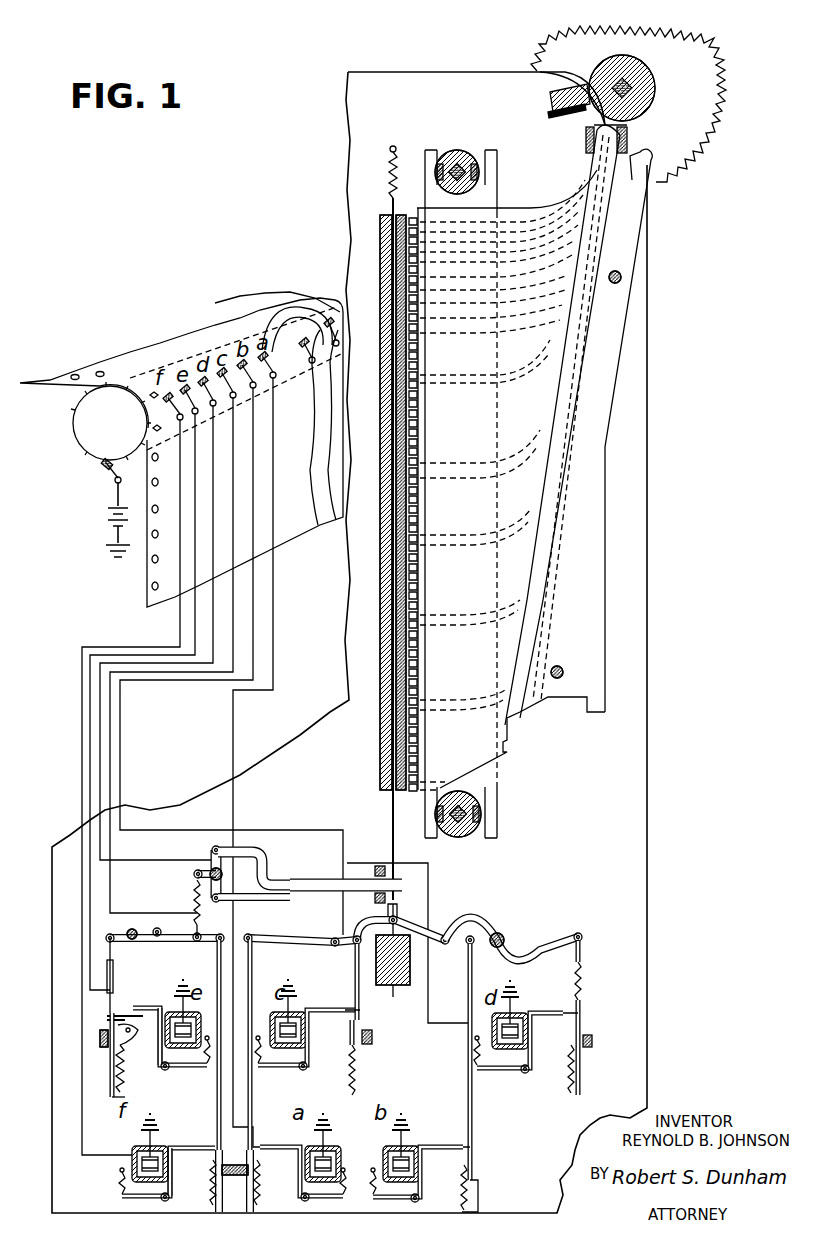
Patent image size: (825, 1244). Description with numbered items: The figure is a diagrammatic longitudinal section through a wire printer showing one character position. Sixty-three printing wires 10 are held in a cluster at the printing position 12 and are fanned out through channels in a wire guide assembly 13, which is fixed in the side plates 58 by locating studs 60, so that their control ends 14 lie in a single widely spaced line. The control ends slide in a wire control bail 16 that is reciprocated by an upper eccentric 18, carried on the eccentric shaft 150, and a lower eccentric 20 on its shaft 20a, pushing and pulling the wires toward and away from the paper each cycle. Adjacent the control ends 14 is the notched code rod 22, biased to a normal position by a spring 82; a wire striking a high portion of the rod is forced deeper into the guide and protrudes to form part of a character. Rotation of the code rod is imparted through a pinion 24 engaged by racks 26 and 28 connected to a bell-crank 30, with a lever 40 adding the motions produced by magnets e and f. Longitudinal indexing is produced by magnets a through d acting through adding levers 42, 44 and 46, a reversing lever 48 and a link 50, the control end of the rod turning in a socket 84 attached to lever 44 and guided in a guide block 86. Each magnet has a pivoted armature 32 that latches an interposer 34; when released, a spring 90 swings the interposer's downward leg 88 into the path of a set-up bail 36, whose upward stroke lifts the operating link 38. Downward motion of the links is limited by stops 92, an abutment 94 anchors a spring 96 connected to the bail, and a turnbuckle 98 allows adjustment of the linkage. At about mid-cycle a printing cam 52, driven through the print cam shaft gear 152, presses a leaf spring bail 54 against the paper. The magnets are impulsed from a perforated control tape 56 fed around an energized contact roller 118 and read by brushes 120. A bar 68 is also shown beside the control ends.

The printing wire 10 is at (540, 305).
The printing position 12 is at (587, 130).
The wire guide assembly 13 is at (594, 478).
The control end 14 is at (420, 327).
The wire control bail 16 is at (485, 205).
The eccentric 18 is at (452, 155).
The eccentric 20 is at (466, 836).
The lower pulley shaft 20a is at (470, 812).
The code rod 22 is at (393, 205).
The pinion 24 is at (402, 893).
The rack 26 is at (352, 882).
The rack 28 is at (248, 847).
The bell-crank 30 is at (210, 847).
The armature 32 is at (172, 1165).
The interposer 34 is at (178, 1148).
The bail 36 is at (235, 1181).
The link 38 is at (218, 1105).
The lever 40 is at (193, 940).
The adding lever 42 is at (277, 938).
The adding lever 44 is at (405, 919).
The adding lever 46 is at (565, 935).
The reversing lever 48 is at (490, 930).
The link 50 is at (470, 945).
The printing cam 52 is at (660, 80).
The leaf spring bail 54 is at (585, 90).
The control tape 56 is at (127, 353).
The side plate 58 is at (632, 414).
The locating stud 60 is at (660, 672).
The magnet bar 68 is at (380, 258).
The spring 82 is at (393, 160).
The socket 84 is at (388, 906).
The guide block 86 is at (392, 988).
The leg 88 is at (108, 1016).
The spring 90 is at (135, 1032).
The stop 92 is at (108, 1045).
The abutment 94 is at (98, 1038).
The spring 96 is at (124, 1090).
The turnbuckle 98 is at (106, 976).
The contact roller 118 is at (98, 415).
The reading brushes 120 is at (278, 325).
The eccentric shaft 150 is at (463, 166).
The print cam shaft gear 152 is at (702, 97).